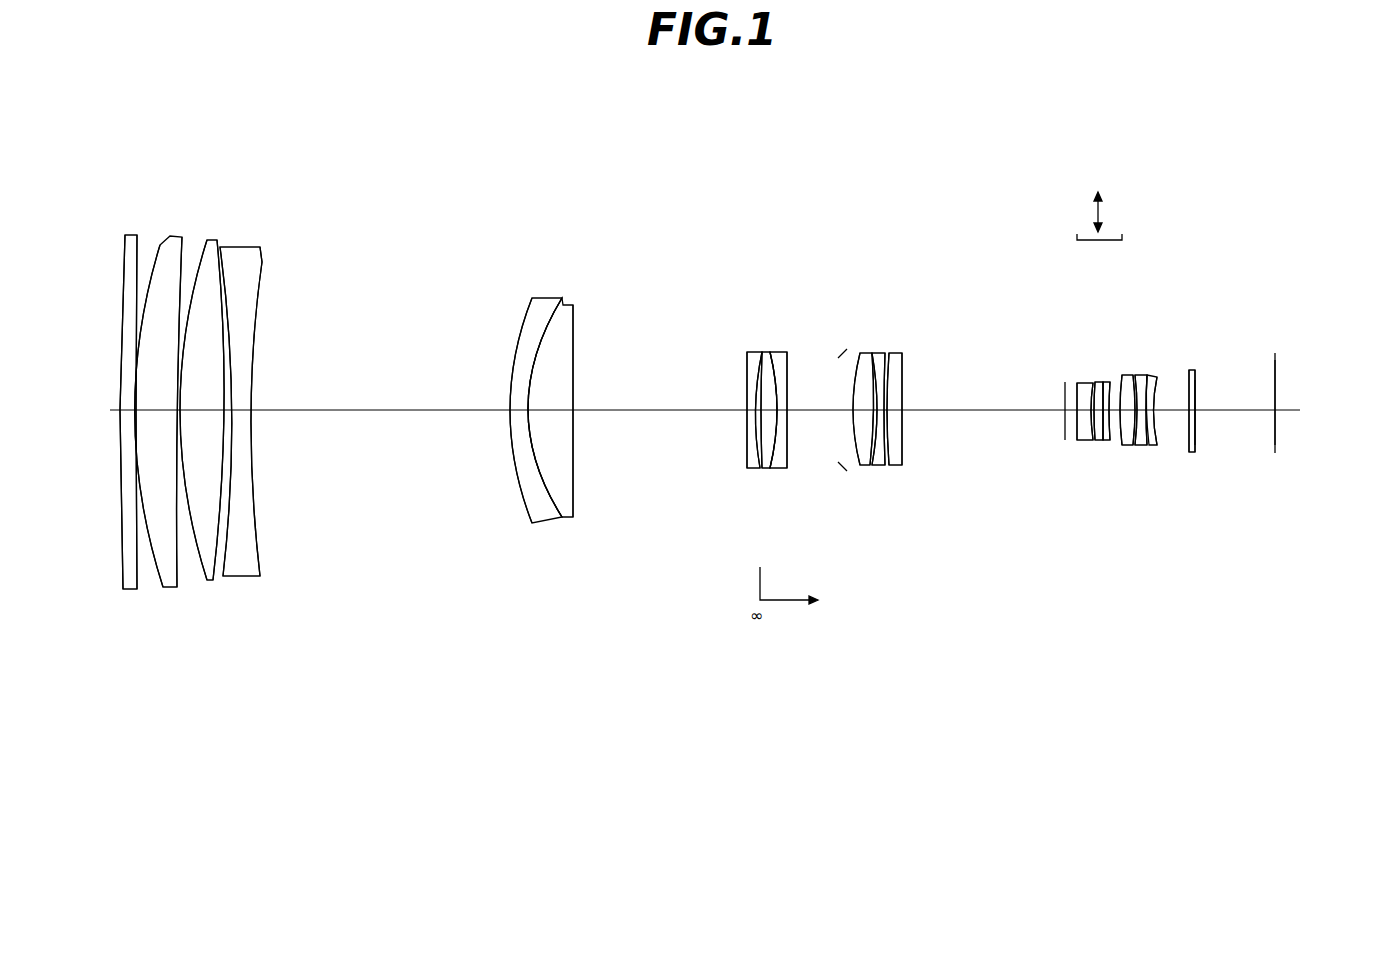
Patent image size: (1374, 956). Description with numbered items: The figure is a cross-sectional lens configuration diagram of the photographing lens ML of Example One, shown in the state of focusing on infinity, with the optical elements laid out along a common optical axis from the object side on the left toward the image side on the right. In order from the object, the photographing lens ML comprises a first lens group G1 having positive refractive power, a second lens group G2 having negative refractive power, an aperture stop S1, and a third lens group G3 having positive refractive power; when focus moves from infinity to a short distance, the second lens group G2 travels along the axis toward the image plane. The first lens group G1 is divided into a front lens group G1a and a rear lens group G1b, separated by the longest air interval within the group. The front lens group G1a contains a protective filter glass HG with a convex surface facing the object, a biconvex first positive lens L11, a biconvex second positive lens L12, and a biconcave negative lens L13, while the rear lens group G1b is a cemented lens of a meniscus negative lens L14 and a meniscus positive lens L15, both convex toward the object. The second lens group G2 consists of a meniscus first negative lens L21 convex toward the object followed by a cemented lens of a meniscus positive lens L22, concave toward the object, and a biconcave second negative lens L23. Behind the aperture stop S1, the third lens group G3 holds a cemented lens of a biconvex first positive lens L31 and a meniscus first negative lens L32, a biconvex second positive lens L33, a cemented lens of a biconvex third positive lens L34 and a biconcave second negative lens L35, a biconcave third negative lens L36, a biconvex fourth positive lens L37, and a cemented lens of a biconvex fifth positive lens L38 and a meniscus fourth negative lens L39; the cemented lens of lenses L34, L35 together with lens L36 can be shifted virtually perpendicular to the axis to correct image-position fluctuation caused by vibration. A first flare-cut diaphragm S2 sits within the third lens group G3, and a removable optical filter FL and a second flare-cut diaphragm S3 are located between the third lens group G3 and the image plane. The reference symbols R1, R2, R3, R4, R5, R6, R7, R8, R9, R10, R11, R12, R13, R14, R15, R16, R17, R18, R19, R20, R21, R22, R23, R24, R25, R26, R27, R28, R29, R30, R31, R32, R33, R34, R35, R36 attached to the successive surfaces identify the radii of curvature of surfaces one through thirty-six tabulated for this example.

The photographing lens ML is at (742, 145).
The first lens group G1 is at (595, 692).
The front lens group G1a is at (272, 650).
The rear lens group G1b is at (595, 650).
The second lens group G2 is at (817, 558).
The third lens group G3 is at (1195, 558).
The protective filter glass HG is at (130, 592).
The first positive lens L11 is at (172, 590).
The second positive lens L12 is at (210, 582).
The negative lens L13 is at (240, 578).
The negative lens L14 is at (547, 527).
The positive lens L15 is at (573, 518).
The first negative lens L21 is at (749, 470).
The positive lens L22 is at (764, 470).
The second negative lens L23 is at (780, 470).
The first positive lens L31 is at (863, 468).
The first negative lens L32 is at (877, 470).
The second positive lens L33 is at (898, 468).
The third positive lens L34 is at (1083, 442).
The second negative lens L35 is at (1099, 442).
The third negative lens L36 is at (1107, 442).
The fourth positive lens L37 is at (1128, 447).
The fifth positive lens L38 is at (1140, 447).
The fourth negative lens L39 is at (1152, 447).
The aperture stop S1 is at (845, 468).
The first flare-cut diaphragm S2 is at (1063, 435).
The second flare-cut diaphragm S3 is at (1277, 452).
The removable optical filter FL is at (1197, 445).
The radius of curvature of surface 1 R1 is at (120, 250).
The radius of curvature of surface 2 R2 is at (140, 245).
The radius of curvature of surface 3 R3 is at (158, 243).
The radius of curvature of surface 4 R4 is at (185, 237).
The radius of curvature of surface 5 R5 is at (203, 242).
The radius of curvature of surface 6 R6 is at (226, 247).
The radius of curvature of surface 7 R7 is at (225, 250).
The radius of curvature of surface 8 R8 is at (258, 270).
The radius of curvature of surface 9 R9 is at (525, 312).
The radius of curvature of surface 10 R10 is at (552, 322).
The radius of curvature of surface 11 R11 is at (573, 323).
The radius of curvature of surface 12 R12 is at (745, 358).
The radius of curvature of surface 13 R13 is at (760, 357).
The radius of curvature of surface 14 R14 is at (763, 357).
The radius of curvature of surface 15 R15 is at (772, 352).
The radius of curvature of surface 16 R16 is at (787, 352).
The radius of curvature of surface 17 R17 is at (858, 354).
The radius of curvature of surface 18 R18 is at (870, 354).
The radius of curvature of surface 19 R19 is at (873, 353).
The radius of curvature of surface 20 R20 is at (886, 353).
The radius of curvature of surface 21 R21 is at (891, 352).
The radius of curvature of surface 22 R22 is at (902, 352).
The radius of curvature of surface 23 R23 is at (1076, 395).
The radius of curvature of surface 24 R24 is at (1090, 385).
The radius of curvature of surface 25 R25 is at (1094, 384).
The radius of curvature of surface 26 R26 is at (1102, 384).
The radius of curvature of surface 27 R27 is at (1109, 384).
The radius of curvature of surface 28 R28 is at (1122, 378).
The radius of curvature of surface 29 R29 is at (1132, 378).
The radius of curvature of surface 30 R30 is at (1136, 376).
The radius of curvature of surface 31 R31 is at (1147, 377).
The radius of curvature of surface 32 R32 is at (1157, 378).
The radius of curvature of surface 33 R33 is at (1189, 372).
The radius of curvature of surface 34 R34 is at (1196, 370).
The radius of curvature of surface 35 R35 is at (1196, 385).
The radius of curvature of surface 36 R36 is at (1275, 362).